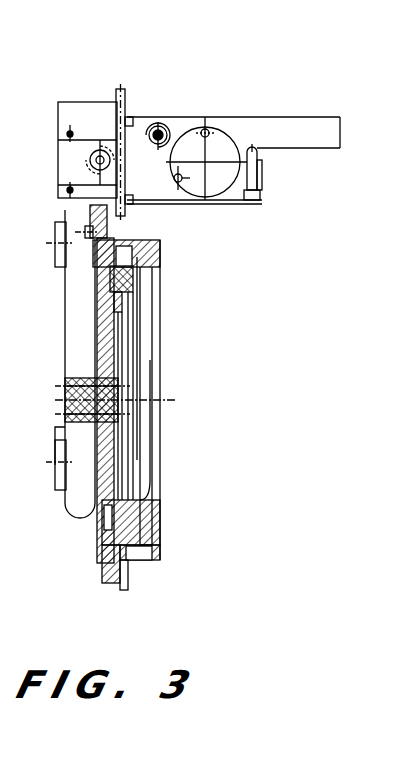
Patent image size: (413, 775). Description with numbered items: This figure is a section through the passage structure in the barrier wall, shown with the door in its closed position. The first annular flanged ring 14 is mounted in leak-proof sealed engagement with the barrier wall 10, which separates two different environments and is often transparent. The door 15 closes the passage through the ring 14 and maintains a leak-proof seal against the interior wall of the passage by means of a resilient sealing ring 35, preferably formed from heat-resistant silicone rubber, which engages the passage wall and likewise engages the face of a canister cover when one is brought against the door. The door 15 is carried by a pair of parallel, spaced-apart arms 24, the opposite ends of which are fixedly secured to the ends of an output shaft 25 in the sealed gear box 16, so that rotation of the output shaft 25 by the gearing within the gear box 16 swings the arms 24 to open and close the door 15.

The barrier wall 10 is at (128, 585).
The first annular flanged ring 14 is at (100, 566).
The door 15 is at (96, 306).
The sealed gear box 16 is at (88, 100).
The arms 24 is at (65, 503).
The output shaft 25 is at (100, 161).
The sealing ring 35 is at (130, 290).